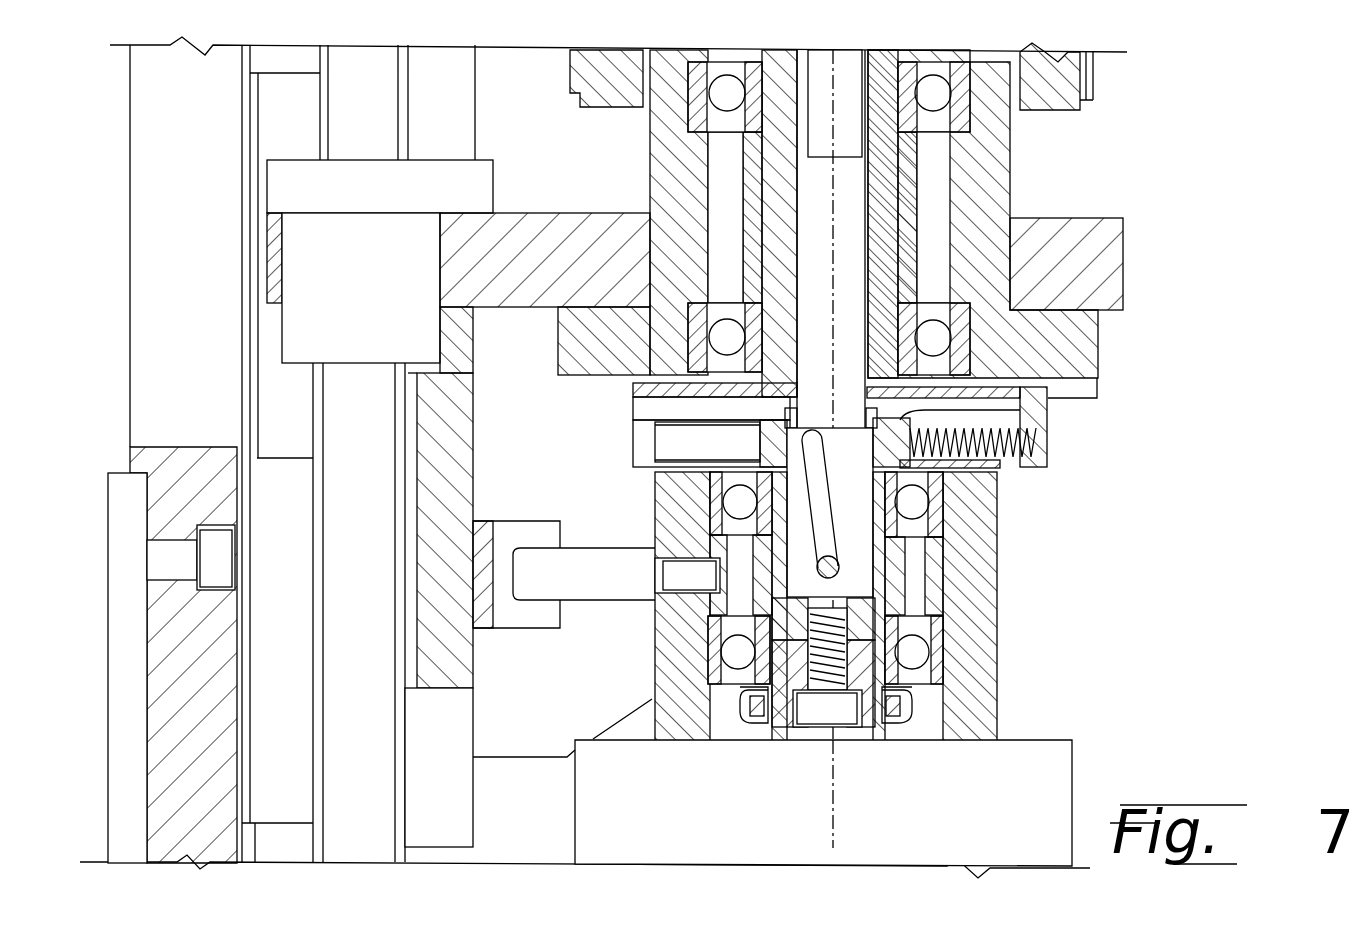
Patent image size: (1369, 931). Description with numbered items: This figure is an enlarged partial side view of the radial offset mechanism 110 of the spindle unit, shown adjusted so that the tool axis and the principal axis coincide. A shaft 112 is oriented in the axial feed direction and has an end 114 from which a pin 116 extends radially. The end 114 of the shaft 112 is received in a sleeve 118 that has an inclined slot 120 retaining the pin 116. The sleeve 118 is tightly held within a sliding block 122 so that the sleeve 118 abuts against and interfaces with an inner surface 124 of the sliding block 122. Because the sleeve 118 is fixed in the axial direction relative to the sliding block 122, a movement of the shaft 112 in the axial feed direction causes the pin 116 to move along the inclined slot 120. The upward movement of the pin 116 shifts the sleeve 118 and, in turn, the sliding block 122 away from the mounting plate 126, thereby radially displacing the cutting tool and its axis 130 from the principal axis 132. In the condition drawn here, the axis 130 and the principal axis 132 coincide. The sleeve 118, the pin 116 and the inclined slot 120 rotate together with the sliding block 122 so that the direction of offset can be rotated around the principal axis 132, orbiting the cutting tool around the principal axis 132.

The radial offset mechanism 110 is at (1090, 634).
The shaft 112 is at (848, 72).
The end 114 is at (818, 488).
The pin 116 is at (837, 567).
The sleeve 118 is at (852, 533).
The inclined slot 120 is at (812, 452).
The sliding block 122 is at (1050, 432).
The inner surface 124 is at (800, 527).
The mounting plate 126 is at (208, 307).
The axis 130 is at (830, 790).
The principal axis 132 is at (833, 185).